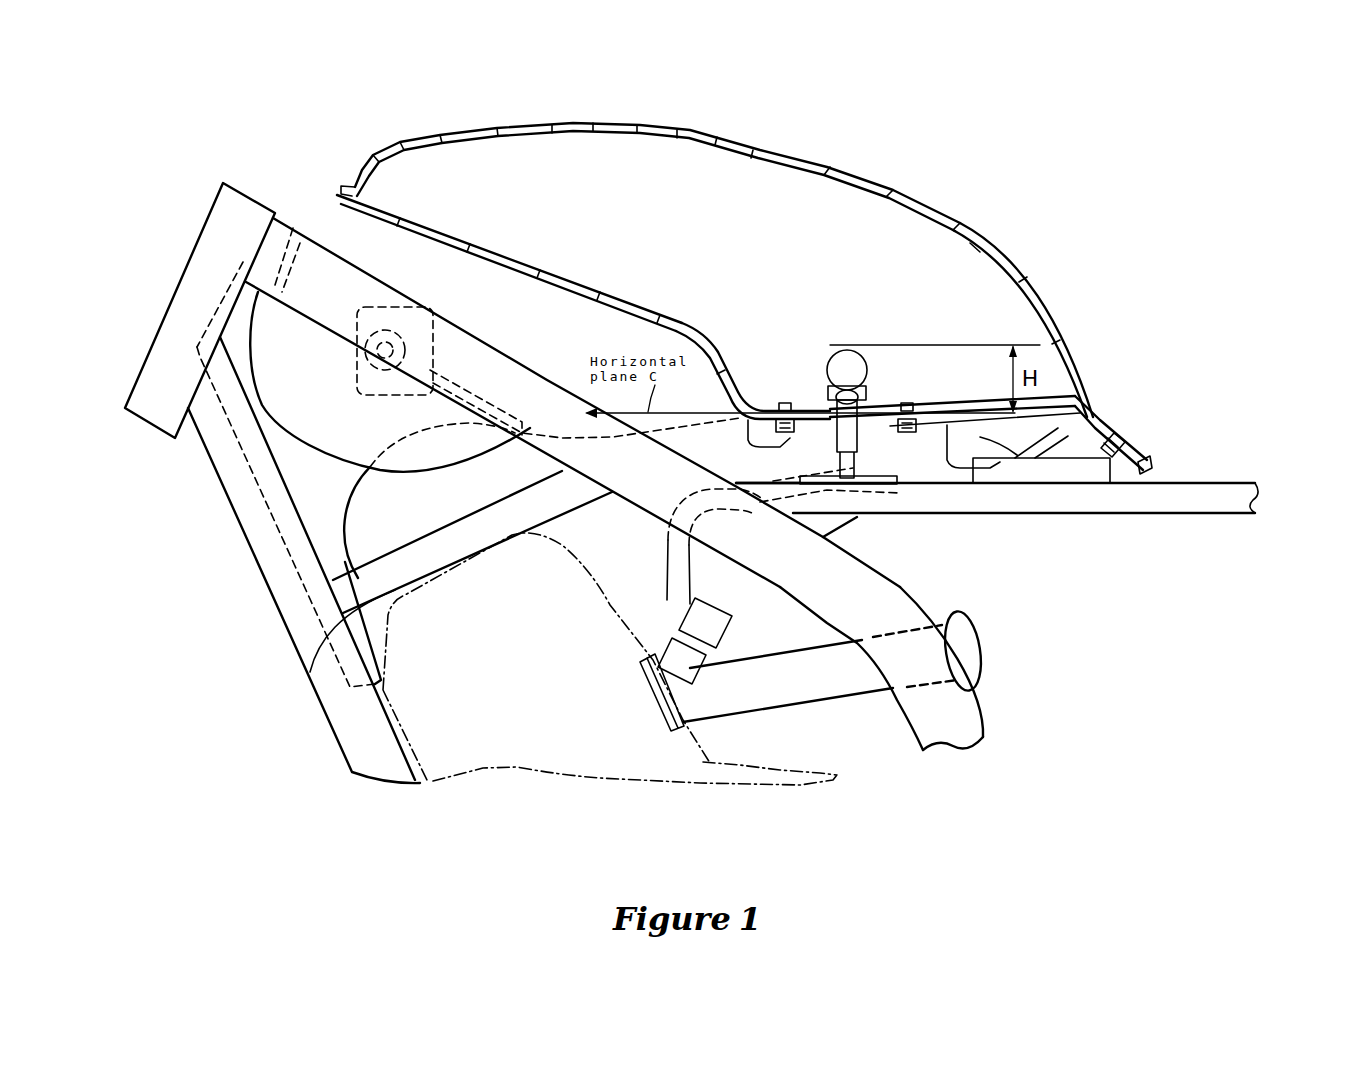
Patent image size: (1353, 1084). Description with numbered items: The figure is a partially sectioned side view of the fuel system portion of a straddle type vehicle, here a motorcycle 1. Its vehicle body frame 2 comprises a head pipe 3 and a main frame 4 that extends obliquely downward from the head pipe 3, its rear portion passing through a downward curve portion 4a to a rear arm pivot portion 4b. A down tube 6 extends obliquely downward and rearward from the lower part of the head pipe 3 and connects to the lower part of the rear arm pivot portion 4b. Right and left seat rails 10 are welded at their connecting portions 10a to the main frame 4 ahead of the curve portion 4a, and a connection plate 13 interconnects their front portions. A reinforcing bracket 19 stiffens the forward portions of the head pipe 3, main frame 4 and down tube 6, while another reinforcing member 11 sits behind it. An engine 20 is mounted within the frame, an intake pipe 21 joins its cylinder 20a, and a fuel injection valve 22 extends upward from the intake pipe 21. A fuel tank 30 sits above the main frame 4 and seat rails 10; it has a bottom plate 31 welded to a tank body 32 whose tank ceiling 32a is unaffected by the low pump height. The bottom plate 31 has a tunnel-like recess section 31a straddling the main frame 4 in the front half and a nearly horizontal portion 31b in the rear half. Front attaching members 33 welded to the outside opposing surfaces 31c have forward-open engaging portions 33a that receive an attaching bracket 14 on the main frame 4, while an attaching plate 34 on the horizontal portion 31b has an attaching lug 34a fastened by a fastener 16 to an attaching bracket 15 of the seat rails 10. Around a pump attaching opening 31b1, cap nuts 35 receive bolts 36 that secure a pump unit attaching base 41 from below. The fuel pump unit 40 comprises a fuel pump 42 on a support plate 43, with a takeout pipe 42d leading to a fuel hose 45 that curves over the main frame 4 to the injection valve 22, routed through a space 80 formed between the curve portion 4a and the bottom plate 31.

The motorcycle 1 is at (339, 86).
The vehicle body frame 2 is at (172, 275).
The head pipe 3 is at (243, 207).
The main frame 4 is at (290, 233).
The downward curve portion 4a is at (870, 583).
The rear arm pivot portion 4b is at (975, 725).
The down tube 6 is at (212, 443).
The seat rails 10 is at (1230, 500).
The connecting portions 10a is at (790, 515).
The reinforcing member 11 is at (308, 670).
The connection plate 13 is at (825, 538).
The attaching bracket 14 is at (327, 452).
The attaching bracket 15 is at (1098, 478).
The fastener 16 is at (1117, 440).
The reinforcing bracket 19 is at (327, 522).
The engine 20 is at (435, 785).
The cylinder 20a is at (603, 598).
The intake pipe 21 is at (850, 692).
The fuel injection valve 22 is at (720, 660).
The fuel tank 30 is at (905, 184).
The bottom plate 31 is at (948, 498).
The tunnel-like recess section 31a is at (537, 263).
The nearly horizontal portion 31b is at (900, 410).
The pump attaching opening 31b1 is at (808, 408).
The outside opposing surfaces 31c is at (603, 330).
The tank body 32 is at (1057, 287).
The tank ceiling 32a is at (973, 247).
The front attaching members 33 is at (400, 307).
The engaging portion 33a is at (433, 330).
The attaching plate 34 is at (1103, 437).
The attaching lug 34a is at (1147, 453).
The cap nuts 35 is at (783, 405).
The bolts 36 is at (750, 428).
The fuel pump unit 40 is at (845, 364).
The pump unit attaching base 41 is at (868, 490).
The fuel pump 42 is at (847, 352).
The takeout pipe 42d is at (827, 385).
The support plate 43 is at (874, 400).
The fuel hose 45 is at (705, 500).
The space 80 is at (1033, 460).